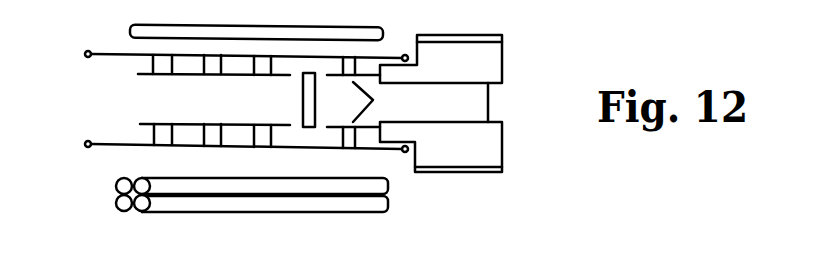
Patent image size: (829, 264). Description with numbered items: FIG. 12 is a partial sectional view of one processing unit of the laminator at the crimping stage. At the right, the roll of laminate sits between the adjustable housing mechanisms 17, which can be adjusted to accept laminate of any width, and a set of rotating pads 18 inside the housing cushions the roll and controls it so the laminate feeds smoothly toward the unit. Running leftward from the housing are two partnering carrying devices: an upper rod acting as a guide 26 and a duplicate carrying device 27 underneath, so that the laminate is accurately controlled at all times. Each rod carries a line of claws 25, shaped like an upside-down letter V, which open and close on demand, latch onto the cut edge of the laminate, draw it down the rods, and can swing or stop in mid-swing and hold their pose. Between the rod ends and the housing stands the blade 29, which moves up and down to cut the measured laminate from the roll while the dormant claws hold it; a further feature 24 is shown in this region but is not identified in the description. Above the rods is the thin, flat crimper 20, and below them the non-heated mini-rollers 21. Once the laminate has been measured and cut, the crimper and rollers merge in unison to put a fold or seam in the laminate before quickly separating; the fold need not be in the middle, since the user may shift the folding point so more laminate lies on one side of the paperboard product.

The crimper 20 is at (241, 28).
The guide rod 26 is at (225, 53).
The lower carrying device 27 is at (226, 144).
The claws 25 is at (260, 153).
The blade 29 is at (328, 100).
The gap 24 is at (381, 102).
The adjustable housing mechanism 17 is at (441, 103).
The rotating pads 18 is at (507, 50).
The non-heated rollers 21 is at (271, 201).